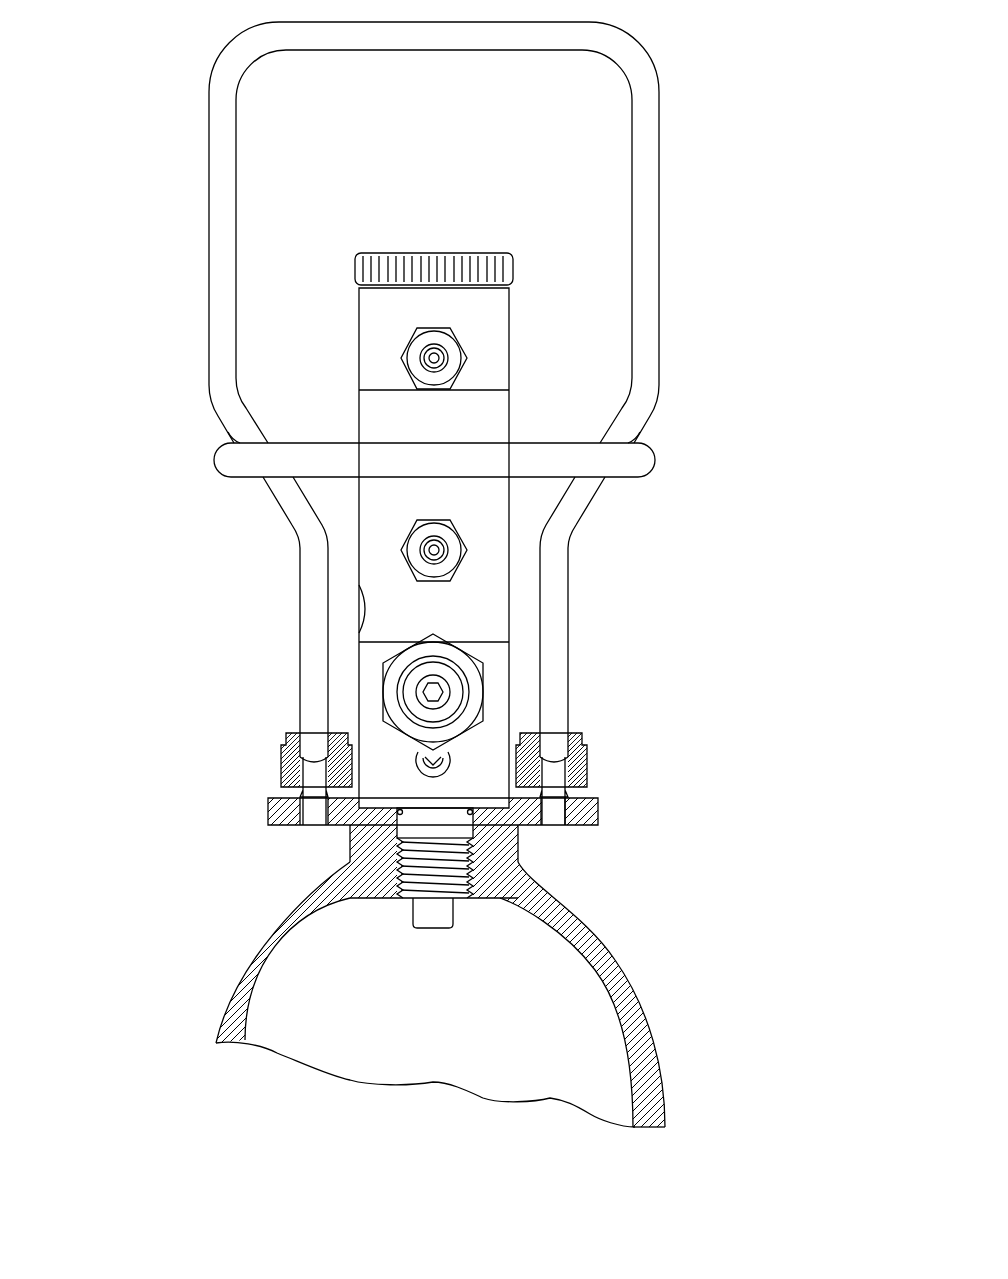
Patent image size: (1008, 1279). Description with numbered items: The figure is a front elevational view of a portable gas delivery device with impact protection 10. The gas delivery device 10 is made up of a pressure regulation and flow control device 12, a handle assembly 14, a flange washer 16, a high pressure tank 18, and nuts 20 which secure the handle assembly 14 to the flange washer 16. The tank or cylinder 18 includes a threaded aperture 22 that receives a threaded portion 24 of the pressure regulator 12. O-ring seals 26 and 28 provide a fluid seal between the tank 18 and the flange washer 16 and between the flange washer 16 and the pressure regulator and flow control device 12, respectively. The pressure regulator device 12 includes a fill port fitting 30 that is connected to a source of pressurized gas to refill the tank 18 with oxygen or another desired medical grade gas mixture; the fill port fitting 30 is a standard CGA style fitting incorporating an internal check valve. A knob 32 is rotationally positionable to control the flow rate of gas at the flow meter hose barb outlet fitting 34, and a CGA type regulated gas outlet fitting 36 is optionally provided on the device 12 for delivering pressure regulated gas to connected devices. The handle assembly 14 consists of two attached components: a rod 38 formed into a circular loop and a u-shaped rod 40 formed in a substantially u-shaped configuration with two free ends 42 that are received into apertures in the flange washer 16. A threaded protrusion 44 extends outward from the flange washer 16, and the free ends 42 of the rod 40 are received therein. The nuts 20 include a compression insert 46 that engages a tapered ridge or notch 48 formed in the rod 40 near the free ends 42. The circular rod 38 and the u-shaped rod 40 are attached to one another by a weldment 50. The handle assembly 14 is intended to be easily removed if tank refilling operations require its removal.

The portable gas delivery device with impact protection 10 is at (131, 876).
The pressure regulation and flow control device 12 is at (380, 223).
The handle assembly 14 is at (682, 285).
The flange washer 16 is at (598, 807).
The high pressure tank 18 is at (593, 926).
The nuts 20 is at (282, 773).
The threaded aperture 22 is at (404, 903).
The threaded portion 24 is at (470, 900).
The O-ring seal 26 is at (356, 868).
The O-ring seal 28 is at (468, 810).
The fill port fitting 30 is at (440, 634).
The knob 32 is at (515, 272).
The flow meter hose barb outlet fitting 34 is at (467, 358).
The CGA type regulated gas outlet fitting 36 is at (437, 520).
The rod formed into a circular loop 38 is at (655, 463).
The u-shaped rod 40 is at (632, 172).
The free ends 42 is at (315, 827).
The threaded protrusion 44 is at (285, 797).
The compression insert 46 is at (297, 740).
The tapered ridge or notch 48 is at (315, 752).
The weldment 50 is at (205, 440).